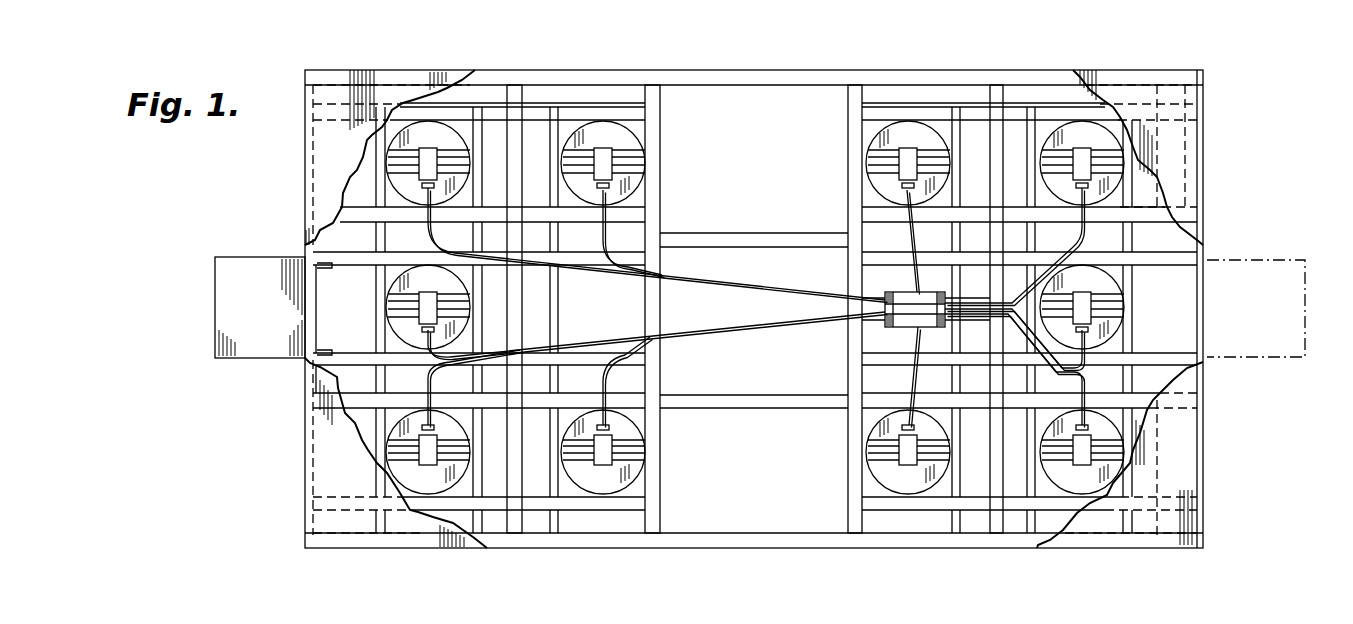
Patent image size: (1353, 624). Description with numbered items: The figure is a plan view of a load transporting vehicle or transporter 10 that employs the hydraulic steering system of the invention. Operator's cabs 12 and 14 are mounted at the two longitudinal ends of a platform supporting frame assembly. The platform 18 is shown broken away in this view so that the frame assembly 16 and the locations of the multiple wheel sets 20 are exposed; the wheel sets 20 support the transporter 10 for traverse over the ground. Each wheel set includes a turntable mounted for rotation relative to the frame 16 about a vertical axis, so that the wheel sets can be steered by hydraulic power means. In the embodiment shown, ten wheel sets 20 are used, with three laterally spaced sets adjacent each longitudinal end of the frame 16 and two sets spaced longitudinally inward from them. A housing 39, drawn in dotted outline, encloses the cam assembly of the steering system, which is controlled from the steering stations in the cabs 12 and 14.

The transporter 10 is at (822, 555).
The operator's cab 12 is at (258, 258).
The operator's cab 14 is at (1246, 260).
The frame assembly 16 is at (748, 72).
The platform 18 is at (385, 76).
The wheel sets 20 is at (445, 128).
The housing 39 is at (958, 264).